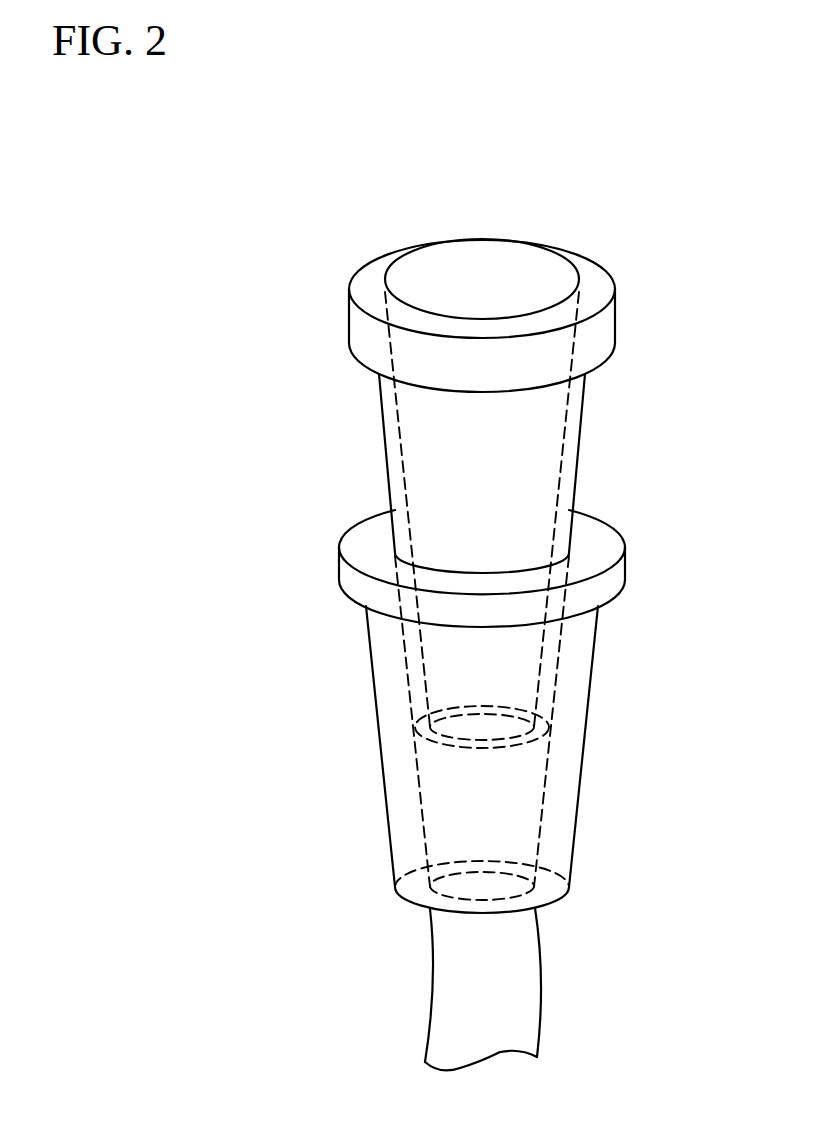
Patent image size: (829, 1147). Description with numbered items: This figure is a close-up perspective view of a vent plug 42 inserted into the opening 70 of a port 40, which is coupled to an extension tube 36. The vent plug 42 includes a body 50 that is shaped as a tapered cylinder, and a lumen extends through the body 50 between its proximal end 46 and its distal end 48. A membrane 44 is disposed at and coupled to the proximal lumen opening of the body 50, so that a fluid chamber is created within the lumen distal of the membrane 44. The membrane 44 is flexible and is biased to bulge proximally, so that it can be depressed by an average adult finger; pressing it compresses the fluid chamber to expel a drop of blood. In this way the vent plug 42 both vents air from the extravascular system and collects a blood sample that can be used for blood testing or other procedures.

The extension tube 36 is at (457, 982).
The port 40 is at (570, 765).
The vent plug 42 is at (397, 448).
The membrane 44 is at (475, 262).
The proximal end 46 is at (372, 275).
The distal end 48 is at (435, 738).
The body 50 is at (578, 452).
The opening 70 is at (570, 545).